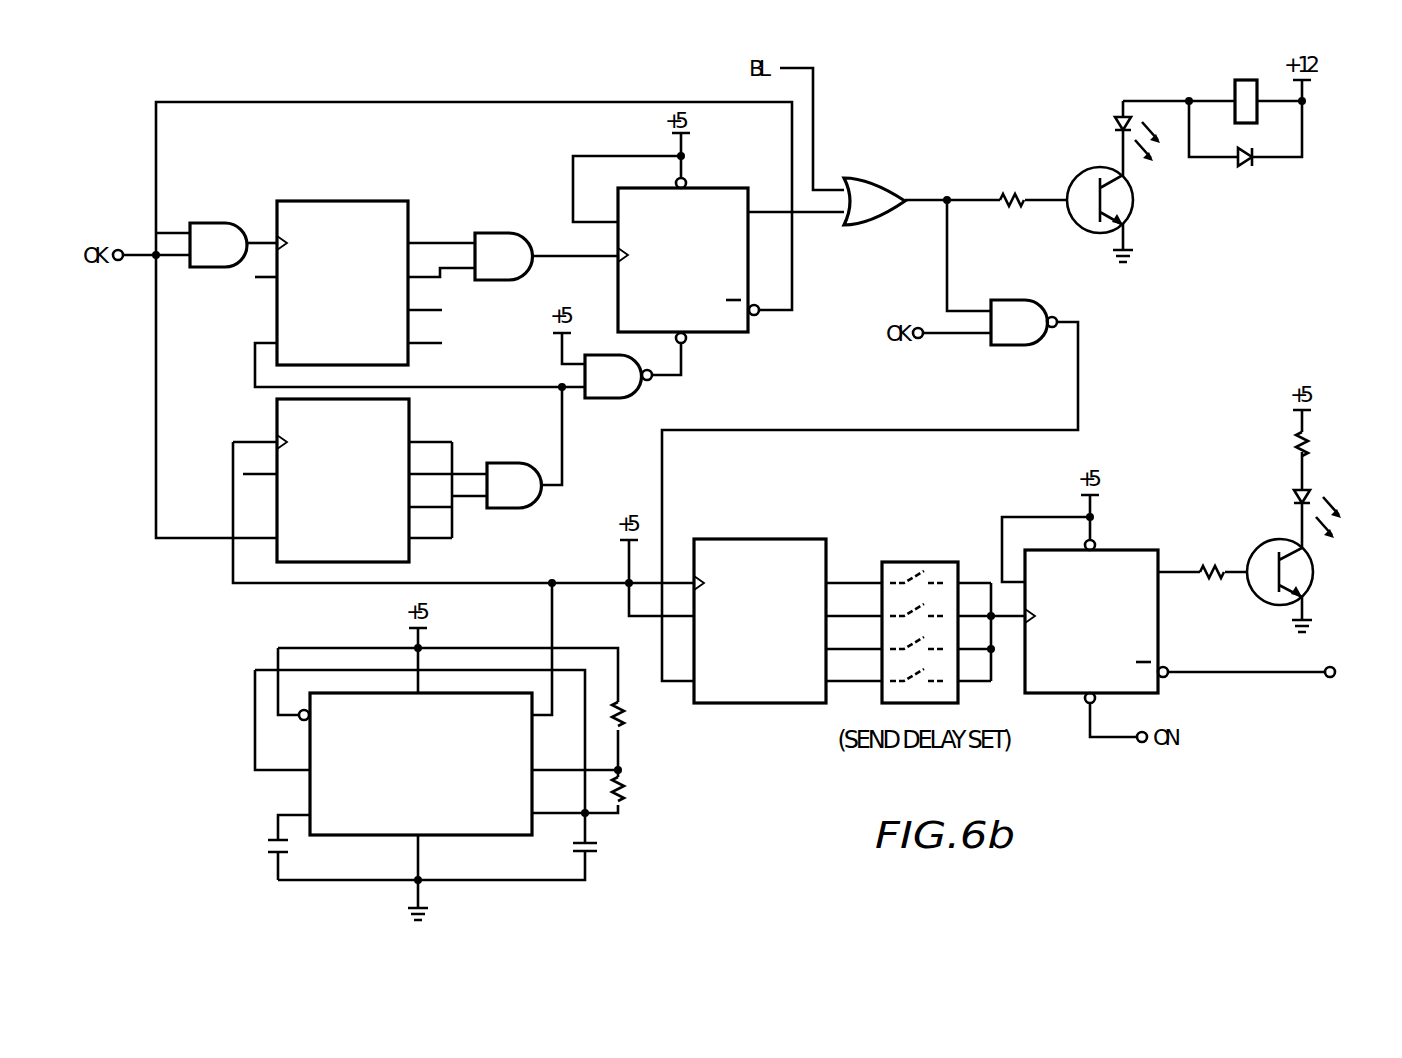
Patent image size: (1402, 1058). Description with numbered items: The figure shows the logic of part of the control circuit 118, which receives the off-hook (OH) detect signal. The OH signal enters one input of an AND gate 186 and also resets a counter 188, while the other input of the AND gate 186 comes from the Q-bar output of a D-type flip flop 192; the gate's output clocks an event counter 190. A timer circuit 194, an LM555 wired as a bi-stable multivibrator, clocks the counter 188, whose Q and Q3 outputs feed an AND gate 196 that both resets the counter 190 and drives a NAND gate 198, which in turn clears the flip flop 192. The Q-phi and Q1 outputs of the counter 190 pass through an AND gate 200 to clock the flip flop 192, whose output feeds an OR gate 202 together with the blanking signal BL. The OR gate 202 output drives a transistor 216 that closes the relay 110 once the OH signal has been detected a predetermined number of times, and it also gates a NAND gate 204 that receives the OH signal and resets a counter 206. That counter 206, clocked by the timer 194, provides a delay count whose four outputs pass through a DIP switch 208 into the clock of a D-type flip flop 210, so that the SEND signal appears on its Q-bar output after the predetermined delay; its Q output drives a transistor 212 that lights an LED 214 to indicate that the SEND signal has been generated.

The control circuit 118 is at (188, 711).
The AND gate 186 is at (215, 224).
The counter 188 is at (311, 519).
The event counter 190 is at (311, 322).
The D-type flip flop 192 is at (722, 333).
The timer circuit 194 is at (403, 790).
The AND gate 196 is at (525, 506).
The NAND gate 198 is at (620, 396).
The AND gate 200 is at (495, 238).
The OR gate 202 is at (875, 180).
The NAND gate 204 is at (1018, 302).
The counter 206 is at (733, 661).
The DIP switch 208 is at (912, 560).
The D-type flip flop 210 is at (1125, 549).
The transistor 212 is at (1313, 573).
The LED 214 is at (1296, 490).
The transistor 216 is at (1128, 198).
The relay 110 is at (1234, 86).